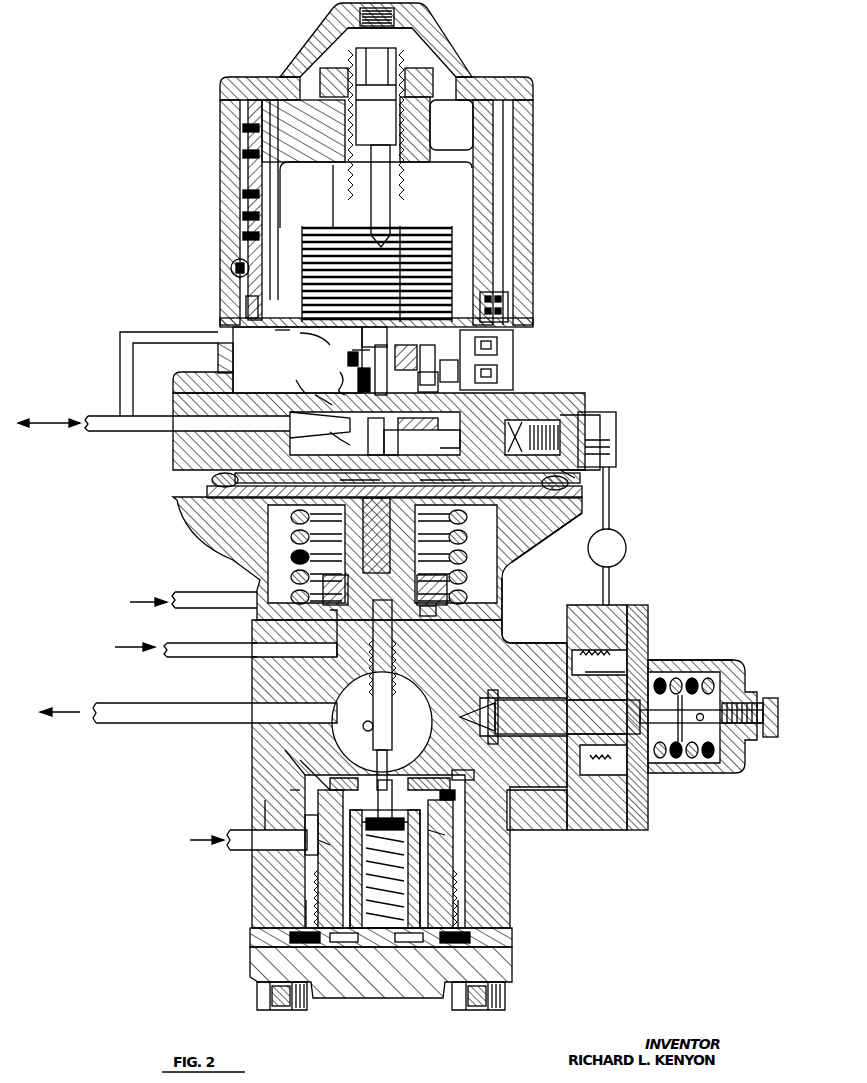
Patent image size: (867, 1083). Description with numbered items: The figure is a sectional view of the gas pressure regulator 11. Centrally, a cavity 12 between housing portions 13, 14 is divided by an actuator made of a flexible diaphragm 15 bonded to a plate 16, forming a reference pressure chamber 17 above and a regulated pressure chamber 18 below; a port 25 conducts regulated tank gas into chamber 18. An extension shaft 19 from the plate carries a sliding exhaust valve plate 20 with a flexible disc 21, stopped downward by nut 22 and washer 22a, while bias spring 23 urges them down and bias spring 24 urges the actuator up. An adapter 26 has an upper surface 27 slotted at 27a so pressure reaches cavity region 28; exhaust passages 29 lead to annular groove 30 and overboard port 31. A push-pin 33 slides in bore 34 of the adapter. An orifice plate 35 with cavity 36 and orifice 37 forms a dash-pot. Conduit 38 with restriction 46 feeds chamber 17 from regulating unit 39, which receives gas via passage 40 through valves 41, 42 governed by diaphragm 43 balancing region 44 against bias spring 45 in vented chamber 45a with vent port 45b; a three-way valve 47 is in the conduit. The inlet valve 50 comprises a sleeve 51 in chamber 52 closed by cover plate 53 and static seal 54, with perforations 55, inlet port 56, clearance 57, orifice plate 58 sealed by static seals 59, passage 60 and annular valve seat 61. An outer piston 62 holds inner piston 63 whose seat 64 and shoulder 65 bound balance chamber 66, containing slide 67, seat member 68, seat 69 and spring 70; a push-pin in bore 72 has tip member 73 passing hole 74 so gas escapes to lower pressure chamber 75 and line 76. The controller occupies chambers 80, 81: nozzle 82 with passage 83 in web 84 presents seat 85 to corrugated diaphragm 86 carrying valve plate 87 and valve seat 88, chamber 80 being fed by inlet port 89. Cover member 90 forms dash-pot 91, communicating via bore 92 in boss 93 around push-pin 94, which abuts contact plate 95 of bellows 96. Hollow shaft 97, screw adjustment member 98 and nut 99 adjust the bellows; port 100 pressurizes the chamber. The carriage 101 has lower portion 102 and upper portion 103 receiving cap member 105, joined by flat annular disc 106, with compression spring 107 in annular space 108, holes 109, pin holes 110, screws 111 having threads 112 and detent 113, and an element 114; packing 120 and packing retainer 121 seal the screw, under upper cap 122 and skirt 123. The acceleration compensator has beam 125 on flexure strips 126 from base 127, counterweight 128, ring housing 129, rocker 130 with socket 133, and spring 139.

The gas pressure regulator 11 is at (627, 440).
The cavity 12 is at (377, 558).
The housing portion 13 is at (565, 480).
The housing portion 14 is at (590, 567).
The flexible diaphragm 15 is at (547, 536).
The plate 16 is at (466, 526).
The reference pressure chamber 17 is at (538, 473).
The regulated pressure chamber 18 is at (505, 562).
The extension shaft 19 is at (388, 561).
The exhaust valve plate 20 is at (415, 554).
The flexible disc 21 is at (452, 584).
The nut 22 is at (331, 591).
The washer 22a is at (428, 590).
The bias spring 23 is at (408, 530).
The bias spring 24 is at (460, 564).
The port 25 is at (255, 610).
The adapter 26 is at (460, 603).
The upper surface 27 is at (316, 557).
The slot 27a is at (298, 563).
The cavity region 28 is at (423, 611).
The exhaust passage 29 is at (298, 592).
The annular groove 30 is at (320, 618).
The port 31 is at (262, 660).
The push-pin 33 is at (388, 745).
The bore 34 is at (361, 733).
The orifice plate 35 is at (394, 477).
The cavity 36 is at (251, 472).
The orifice 37 is at (407, 470).
The conduit 38 is at (611, 500).
The regulating unit 39 is at (662, 642).
The passage 40 is at (464, 771).
The valve 41 is at (472, 705).
The valve 42 is at (595, 672).
The diaphragm 43 is at (597, 780).
The region 44 is at (572, 772).
The bias spring 45 is at (686, 774).
The chamber 45a is at (728, 660).
The vent port 45b is at (712, 774).
The restriction 46 is at (554, 442).
The three-way shutoff and vent valve 47 is at (626, 548).
The inlet valve 50 is at (290, 788).
The sleeve 51 is at (318, 805).
The chamber 52 is at (273, 813).
The cover plate 53 is at (262, 962).
The static seal 54 is at (308, 928).
The perforations 55 is at (447, 829).
The port 56 is at (260, 850).
The clearance 57 is at (453, 812).
The orifice plate 58 is at (342, 778).
The static seals 59 is at (298, 760).
The passage 60 is at (394, 800).
The annular valve seat 61 is at (320, 776).
The outer piston 62 is at (316, 882).
The inner piston 63 is at (420, 864).
The seat 64 is at (410, 778).
The annular shoulder 65 is at (457, 787).
The balance chamber 66 is at (381, 949).
The slide 67 is at (454, 928).
The seat member 68 is at (315, 837).
The seat 69 is at (440, 883).
The spring 70 is at (432, 951).
The bore 72 is at (388, 825).
The tip member 73 is at (425, 848).
The hole 74 is at (325, 826).
The lower pressure chamber 75 is at (422, 721).
The line 76 is at (358, 722).
The chamber 80 is at (470, 427).
The chamber 81 is at (222, 335).
The nozzle 82 is at (445, 468).
The passage 83 is at (360, 468).
The web 84 is at (446, 436).
The seat 85 is at (368, 440).
The corrugated diaphragm 86 is at (320, 425).
The valve plate 87 is at (332, 436).
The valve seat 88 is at (403, 442).
The inlet port 89 is at (177, 432).
The cover member 90 is at (315, 395).
The dash-pot 91 is at (291, 377).
The bore 92 is at (406, 347).
The boss 93 is at (372, 392).
The push-pin 94 is at (412, 424).
The contact plate 95 is at (388, 341).
The bellows 96 is at (465, 275).
The hollow shaft 97 is at (392, 222).
The screw adjustment member 98 is at (403, 182).
The nut 99 is at (397, 55).
The port 100 is at (297, 360).
The carriage 101 is at (542, 320).
The lower portion 102 is at (520, 355).
The upper portion 103 is at (500, 175).
The cap member 105 is at (520, 195).
The flat annular disc 106 is at (309, 342).
The compression spring 107 is at (252, 296).
The annular space 108 is at (276, 337).
The holes 109 is at (245, 134).
The pin holes 110 is at (286, 174).
The screws 111 is at (231, 268).
The threads 112 is at (248, 245).
The detent 113 is at (290, 200).
The partition 114 is at (333, 200).
The packing 120 is at (430, 118).
The packing retainer 121 is at (432, 105).
The upper cap 122 is at (490, 80).
The skirt 123 is at (535, 128).
The beam 125 is at (449, 374).
The flexure strips 126 is at (435, 354).
The base 127 is at (436, 389).
The counterweight 128 is at (505, 341).
The ring housing 129 is at (348, 375).
The rocker 130 is at (360, 353).
The socket 133 is at (340, 354).
The spring 139 is at (325, 375).